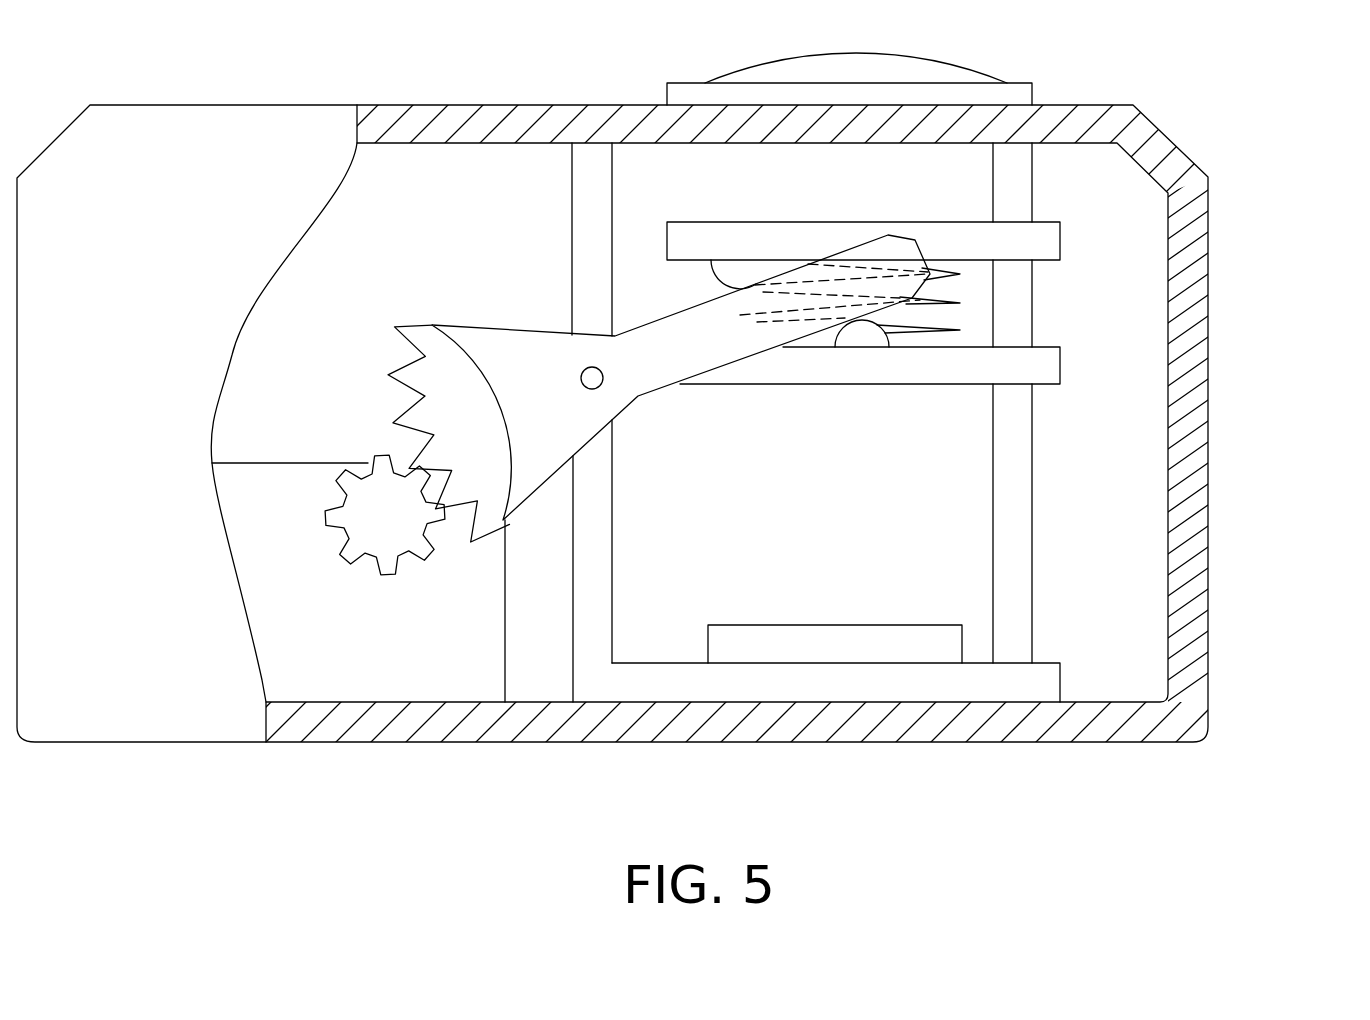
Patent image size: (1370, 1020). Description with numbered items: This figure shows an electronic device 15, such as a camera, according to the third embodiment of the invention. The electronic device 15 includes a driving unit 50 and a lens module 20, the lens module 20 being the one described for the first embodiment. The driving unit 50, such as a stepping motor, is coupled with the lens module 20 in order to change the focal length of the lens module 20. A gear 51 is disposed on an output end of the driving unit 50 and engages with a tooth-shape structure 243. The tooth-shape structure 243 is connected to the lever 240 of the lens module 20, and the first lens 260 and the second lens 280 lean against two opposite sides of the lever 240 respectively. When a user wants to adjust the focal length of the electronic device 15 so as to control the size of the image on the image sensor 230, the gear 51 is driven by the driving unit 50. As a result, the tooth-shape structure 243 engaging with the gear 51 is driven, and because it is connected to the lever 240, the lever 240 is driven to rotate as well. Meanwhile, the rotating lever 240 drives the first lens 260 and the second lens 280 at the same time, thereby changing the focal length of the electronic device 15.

The electronic device 15 is at (1315, 56).
The lens module 20 is at (1078, 537).
The driving unit 50 is at (515, 640).
The gear 51 is at (370, 545).
The image sensor 230 is at (943, 650).
The lever 240 is at (642, 327).
The tooth-shape structure 243 is at (517, 325).
The first lens 260 is at (1047, 240).
The second lens 280 is at (1047, 366).